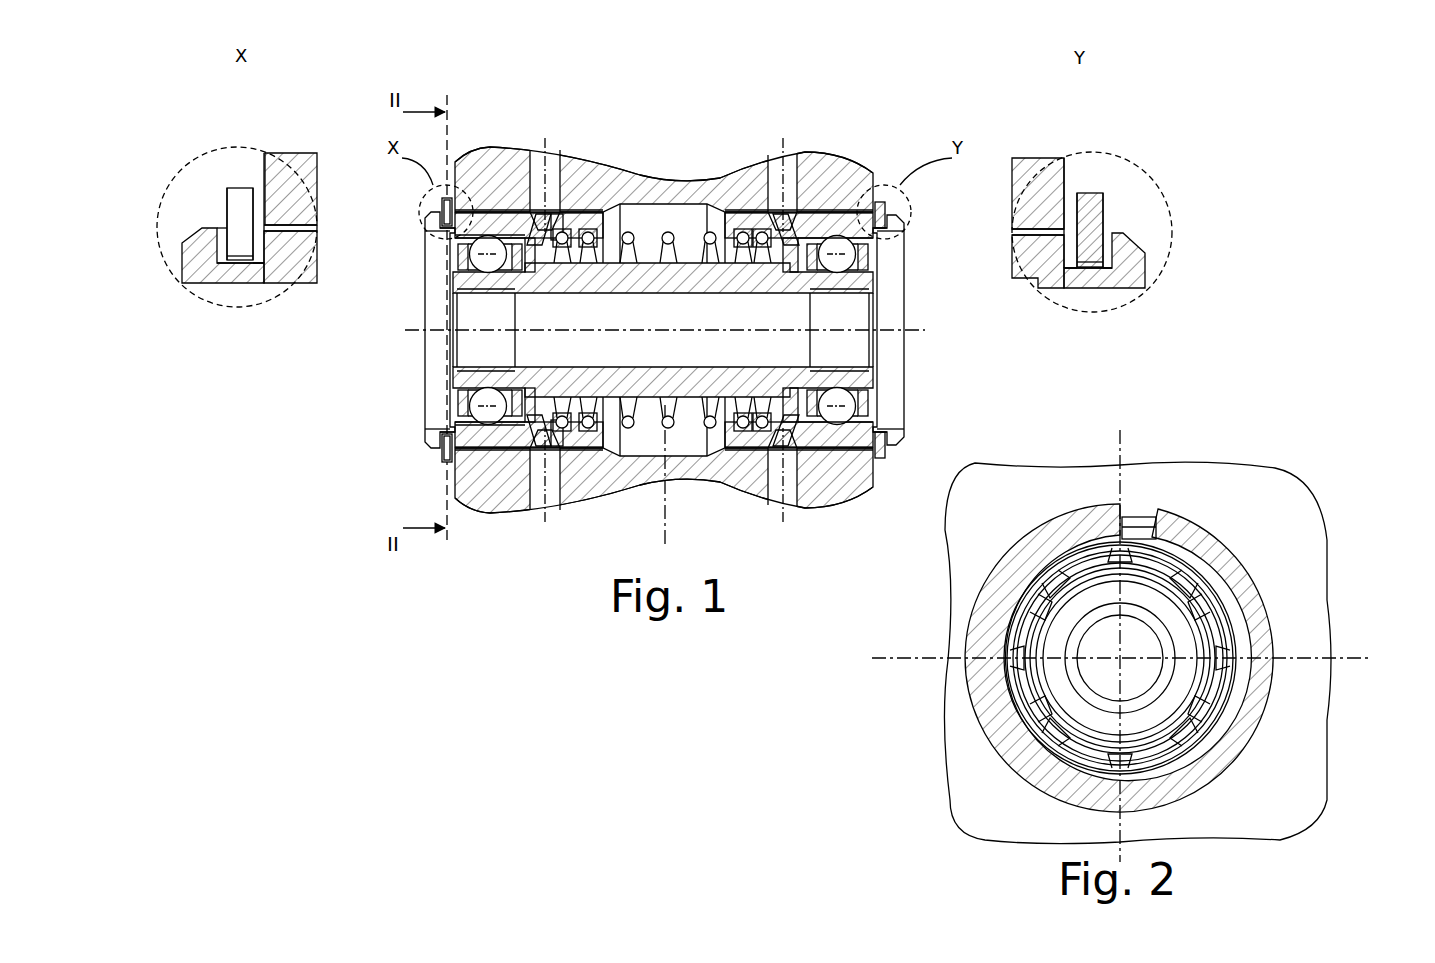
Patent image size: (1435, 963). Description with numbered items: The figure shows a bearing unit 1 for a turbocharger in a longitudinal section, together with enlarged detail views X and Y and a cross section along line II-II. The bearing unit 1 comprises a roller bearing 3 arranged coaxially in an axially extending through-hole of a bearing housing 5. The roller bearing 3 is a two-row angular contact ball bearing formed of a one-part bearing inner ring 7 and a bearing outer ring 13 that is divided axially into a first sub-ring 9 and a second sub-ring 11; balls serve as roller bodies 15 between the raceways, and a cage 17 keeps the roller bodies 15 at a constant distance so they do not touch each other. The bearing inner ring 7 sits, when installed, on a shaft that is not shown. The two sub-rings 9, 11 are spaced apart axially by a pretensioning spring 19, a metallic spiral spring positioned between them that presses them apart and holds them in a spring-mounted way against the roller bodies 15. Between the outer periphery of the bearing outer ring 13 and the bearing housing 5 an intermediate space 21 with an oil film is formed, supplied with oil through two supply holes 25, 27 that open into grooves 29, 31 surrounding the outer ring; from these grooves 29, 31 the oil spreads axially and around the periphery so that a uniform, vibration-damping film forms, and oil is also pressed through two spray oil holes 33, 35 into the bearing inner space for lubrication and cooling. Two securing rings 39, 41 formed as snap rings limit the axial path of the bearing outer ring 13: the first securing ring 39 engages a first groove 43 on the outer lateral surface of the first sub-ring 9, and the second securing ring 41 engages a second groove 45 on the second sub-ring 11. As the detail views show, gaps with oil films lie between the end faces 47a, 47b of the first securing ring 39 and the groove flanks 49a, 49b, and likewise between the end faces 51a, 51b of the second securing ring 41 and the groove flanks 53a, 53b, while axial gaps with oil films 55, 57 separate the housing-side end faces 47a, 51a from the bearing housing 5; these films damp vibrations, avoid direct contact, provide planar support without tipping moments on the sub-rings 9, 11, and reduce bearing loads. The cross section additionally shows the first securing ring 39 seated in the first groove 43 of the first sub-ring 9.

In FIG. 1, the bearing unit 1 is at (961, 91).
In FIG. 2, the bearing unit 1 is at (1338, 492).
In FIG. 1, the roller bearing 3 is at (398, 355).
In FIG. 1, the bearing housing 5 is at (838, 207).
In FIG. 2, the bearing housing 5 is at (1253, 493).
In FIG. 1, the bearing inner ring 7 is at (470, 400).
In FIG. 2, the bearing inner ring 7 is at (1180, 690).
In FIG. 1, the first sub-ring 9 is at (432, 222).
In FIG. 2, the first sub-ring 9 is at (1130, 517).
In FIG. 1, the second sub-ring 11 is at (906, 225).
In FIG. 1, the bearing outer ring 13 is at (423, 398).
In FIG. 1, the roller bodies 15 is at (458, 258).
In FIG. 2, the roller bodies 15 is at (1040, 733).
In FIG. 1, the cage 17 is at (462, 250).
In FIG. 2, the cage 17 is at (1205, 618).
In FIG. 1, the pretensioning spring 19 is at (668, 205).
In FIG. 1, the intermediate space 21 is at (867, 177).
In FIG. 1, the supply hole 25 is at (540, 180).
In FIG. 1, the supply hole 27 is at (786, 215).
In FIG. 1, the groove 29 is at (550, 225).
In FIG. 1, the groove 31 is at (776, 190).
In FIG. 1, the spray oil hole 33 is at (575, 225).
In FIG. 1, the spray oil hole 35 is at (795, 225).
In FIG. 1, the first securing ring 39 is at (443, 463).
In FIG. 2, the first securing ring 39 is at (988, 690).
In FIG. 1, the second securing ring 41 is at (882, 202).
In FIG. 1, the first groove 43 is at (442, 425).
In FIG. 1, the second groove 45 is at (884, 240).
In FIG. 1, the end face 47a is at (264, 183).
In FIG. 1, the end face 47b is at (222, 192).
In FIG. 1, the groove flank 49a is at (262, 250).
In FIG. 1, the groove flank 49b is at (222, 227).
In FIG. 1, the end face 51a is at (1078, 190).
In FIG. 1, the end face 51b is at (1106, 191).
In FIG. 1, the groove flank 53a is at (1070, 263).
In FIG. 1, the groove flank 53b is at (1106, 233).
In FIG. 1, the oil film 55 is at (262, 205).
In FIG. 1, the oil film 57 is at (1072, 190).